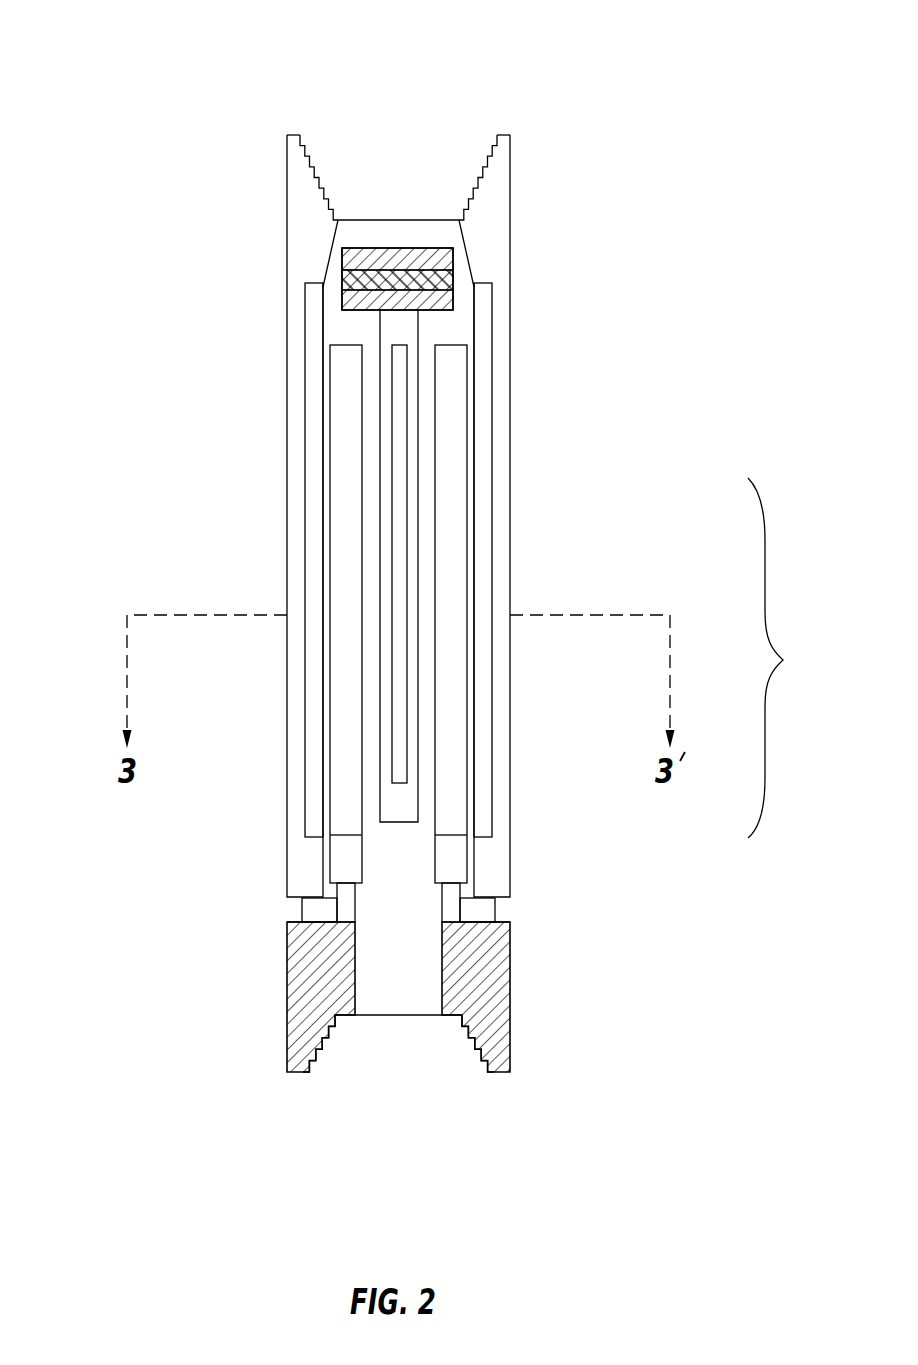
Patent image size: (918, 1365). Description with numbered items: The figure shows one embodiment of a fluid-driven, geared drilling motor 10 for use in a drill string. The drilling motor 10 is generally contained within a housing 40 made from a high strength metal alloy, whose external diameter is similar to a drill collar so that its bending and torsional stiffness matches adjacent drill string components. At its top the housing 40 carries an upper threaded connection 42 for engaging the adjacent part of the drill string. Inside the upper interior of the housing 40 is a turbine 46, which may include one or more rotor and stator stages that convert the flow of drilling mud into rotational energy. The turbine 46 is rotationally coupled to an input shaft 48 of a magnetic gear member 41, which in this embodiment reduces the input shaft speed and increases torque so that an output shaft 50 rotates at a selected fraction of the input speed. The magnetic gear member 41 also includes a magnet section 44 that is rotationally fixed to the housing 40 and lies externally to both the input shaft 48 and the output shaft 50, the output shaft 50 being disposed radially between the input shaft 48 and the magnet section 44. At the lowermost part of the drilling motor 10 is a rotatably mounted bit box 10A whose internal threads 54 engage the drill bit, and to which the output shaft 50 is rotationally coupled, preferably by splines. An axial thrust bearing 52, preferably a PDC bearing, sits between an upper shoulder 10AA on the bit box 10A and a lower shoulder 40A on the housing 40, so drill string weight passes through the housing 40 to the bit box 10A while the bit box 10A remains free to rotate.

The drilling motor 10 is at (130, 44).
The housing 40 is at (305, 203).
The upper threaded connection 42 is at (318, 171).
The turbine 46 is at (453, 275).
The magnet section 44 is at (303, 408).
The output shaft 50 is at (343, 517).
The input shaft 48 is at (408, 805).
The axial thrust bearing 52 is at (300, 912).
The lower shoulder 40A is at (498, 902).
The upper shoulder 10AA is at (500, 913).
The bit box 10A is at (512, 977).
The internal threads 54 is at (320, 1043).
The magnetic gear member 41 is at (792, 658).